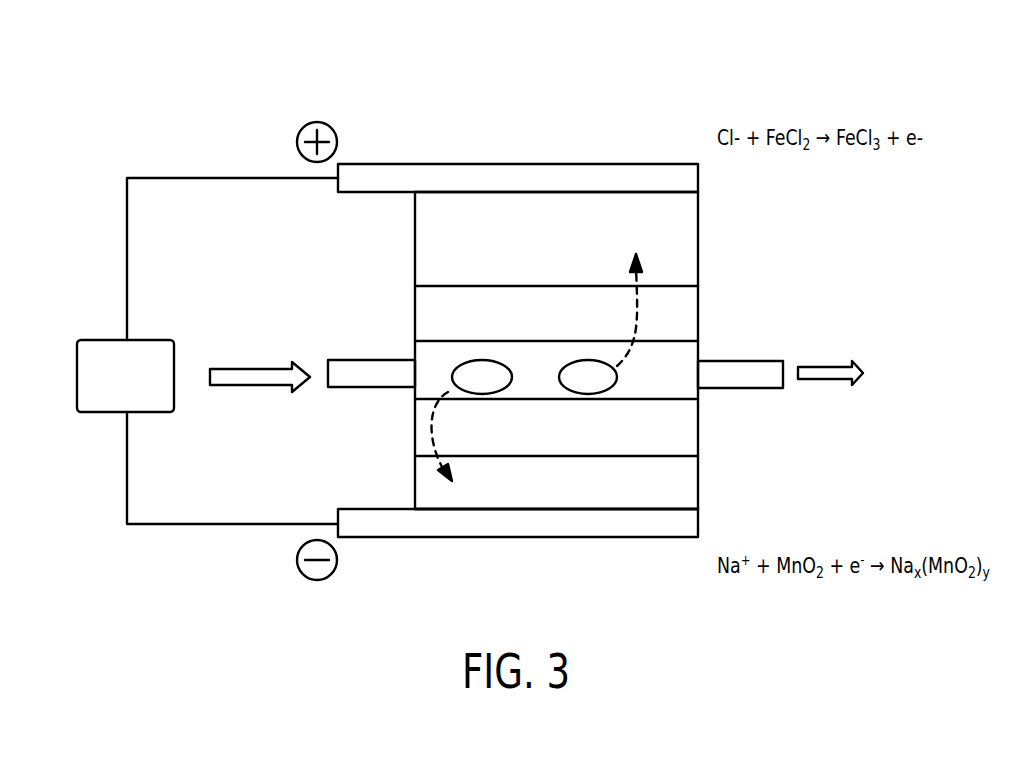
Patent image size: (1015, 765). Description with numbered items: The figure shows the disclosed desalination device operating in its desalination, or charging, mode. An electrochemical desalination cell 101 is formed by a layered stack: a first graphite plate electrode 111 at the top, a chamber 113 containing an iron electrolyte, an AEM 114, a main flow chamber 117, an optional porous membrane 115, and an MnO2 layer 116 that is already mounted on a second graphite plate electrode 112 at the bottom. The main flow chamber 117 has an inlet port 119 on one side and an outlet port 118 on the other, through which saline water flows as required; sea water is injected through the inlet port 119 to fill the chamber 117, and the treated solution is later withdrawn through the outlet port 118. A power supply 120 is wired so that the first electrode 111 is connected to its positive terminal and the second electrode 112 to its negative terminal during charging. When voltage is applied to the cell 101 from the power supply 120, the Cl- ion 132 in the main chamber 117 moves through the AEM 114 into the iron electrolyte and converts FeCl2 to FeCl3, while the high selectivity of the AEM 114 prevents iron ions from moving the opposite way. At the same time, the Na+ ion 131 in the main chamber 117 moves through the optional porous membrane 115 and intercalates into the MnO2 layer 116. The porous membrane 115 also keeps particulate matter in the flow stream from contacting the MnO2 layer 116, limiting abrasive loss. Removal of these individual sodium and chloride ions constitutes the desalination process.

The cell 101 is at (226, 108).
The first graphite plate electrode 111 is at (528, 178).
The second graphite plate electrode 112 is at (667, 525).
The chamber containing an iron electrolyte 113 is at (685, 235).
The AEM 114 is at (685, 305).
The optional porous membrane 115 is at (685, 434).
The MnO2 layer 116 is at (685, 490).
The main flow chamber 117 is at (697, 357).
The outlet port 118 is at (755, 378).
The inlet port 119 is at (370, 358).
The power supply 120 is at (152, 340).
The Na+ ion 131 is at (483, 360).
The Cl- ion 132 is at (588, 360).